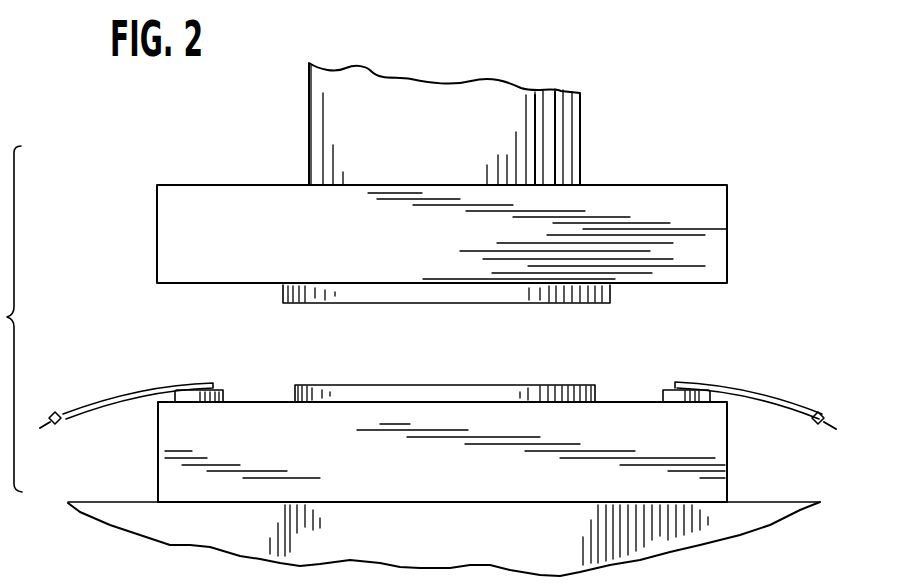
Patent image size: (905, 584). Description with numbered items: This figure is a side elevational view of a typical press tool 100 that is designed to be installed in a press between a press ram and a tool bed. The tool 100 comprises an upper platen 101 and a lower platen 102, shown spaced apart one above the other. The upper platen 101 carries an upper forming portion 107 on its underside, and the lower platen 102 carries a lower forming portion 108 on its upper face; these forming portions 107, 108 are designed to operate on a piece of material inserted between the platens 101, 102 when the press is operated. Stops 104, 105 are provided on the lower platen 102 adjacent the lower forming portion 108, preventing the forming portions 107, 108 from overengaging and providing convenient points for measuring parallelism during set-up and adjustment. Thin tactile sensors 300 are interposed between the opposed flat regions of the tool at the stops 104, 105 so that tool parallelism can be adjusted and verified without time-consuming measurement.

The tool 100 is at (593, 171).
The upper platen 101 is at (157, 230).
The lower platen 102 is at (157, 455).
The stop 104 is at (227, 395).
The stop 105 is at (663, 393).
The upper forming portion 107 is at (285, 290).
The lower forming portion 108 is at (347, 385).
The tactile sensor 300 is at (145, 343).